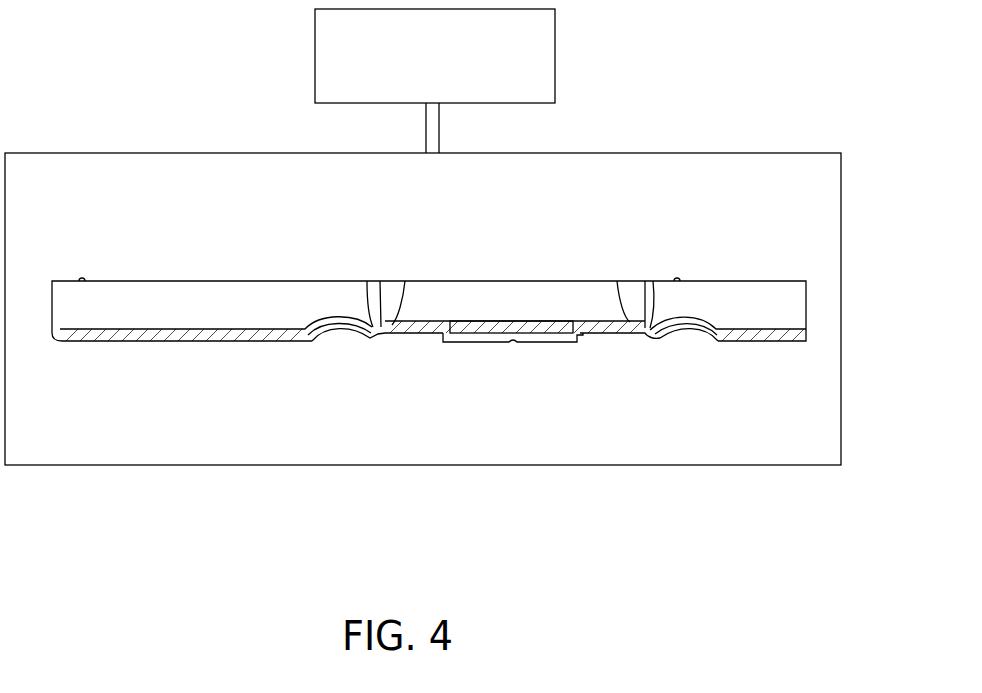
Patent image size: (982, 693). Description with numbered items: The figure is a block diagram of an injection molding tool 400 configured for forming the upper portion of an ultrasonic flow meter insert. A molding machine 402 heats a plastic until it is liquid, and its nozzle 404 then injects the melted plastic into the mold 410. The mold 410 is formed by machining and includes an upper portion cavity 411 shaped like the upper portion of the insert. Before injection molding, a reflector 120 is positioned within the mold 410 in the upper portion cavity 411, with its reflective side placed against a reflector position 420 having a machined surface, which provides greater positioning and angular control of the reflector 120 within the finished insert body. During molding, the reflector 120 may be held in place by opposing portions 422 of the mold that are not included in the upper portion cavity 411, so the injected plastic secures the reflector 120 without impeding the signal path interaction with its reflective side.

The injection molding tool 400 is at (778, 42).
The molding machine 402 is at (556, 43).
The nozzle 404 is at (440, 124).
The mold 410 is at (842, 183).
The upper portion cavity 411 is at (806, 313).
The reflector position 420 is at (472, 321).
The reflector 120 is at (536, 321).
The opposing portions 422 is at (555, 342).